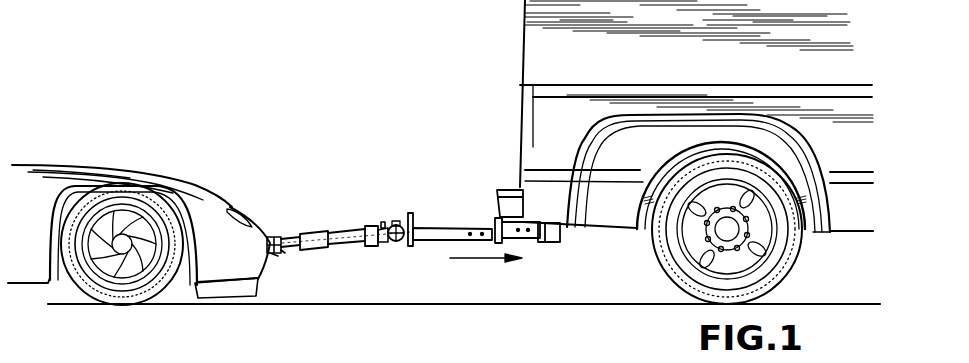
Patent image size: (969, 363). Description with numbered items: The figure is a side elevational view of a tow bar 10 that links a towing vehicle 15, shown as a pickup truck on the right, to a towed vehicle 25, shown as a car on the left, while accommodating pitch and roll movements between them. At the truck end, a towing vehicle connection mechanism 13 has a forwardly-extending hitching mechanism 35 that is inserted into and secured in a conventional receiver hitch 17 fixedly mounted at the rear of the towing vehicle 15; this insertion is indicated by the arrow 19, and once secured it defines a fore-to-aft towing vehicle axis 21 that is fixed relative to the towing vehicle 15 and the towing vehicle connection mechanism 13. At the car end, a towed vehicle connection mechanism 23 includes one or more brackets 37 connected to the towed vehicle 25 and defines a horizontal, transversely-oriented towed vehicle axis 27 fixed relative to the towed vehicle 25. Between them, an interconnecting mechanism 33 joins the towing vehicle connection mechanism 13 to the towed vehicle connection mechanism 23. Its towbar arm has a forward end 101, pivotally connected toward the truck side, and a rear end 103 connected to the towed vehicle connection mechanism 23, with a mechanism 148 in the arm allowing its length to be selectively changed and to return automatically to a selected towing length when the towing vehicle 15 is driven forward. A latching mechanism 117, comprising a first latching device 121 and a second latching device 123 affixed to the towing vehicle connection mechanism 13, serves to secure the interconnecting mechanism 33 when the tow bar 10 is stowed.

The tow bar 10 is at (352, 116).
The towing vehicle connection mechanism 13 is at (466, 212).
The towing vehicle 15 is at (537, 53).
The receiver hitch 17 is at (562, 227).
The arrow 19 is at (480, 259).
The towing vehicle axis 21 is at (543, 241).
The towed vehicle connection mechanism 23 is at (282, 249).
The towed vehicle 25 is at (173, 184).
The towed vehicle axis 27 is at (269, 236).
The interconnecting mechanism 33 is at (401, 243).
The hitching mechanism 35 is at (450, 212).
The bracket 37 is at (276, 254).
The forward end 101 is at (348, 232).
The rear end 103 is at (290, 236).
The latching mechanism 117 is at (417, 186).
The first latching device 121 is at (379, 226).
The second latching device 123 is at (415, 207).
The length-adjusting mechanism 148 is at (317, 231).